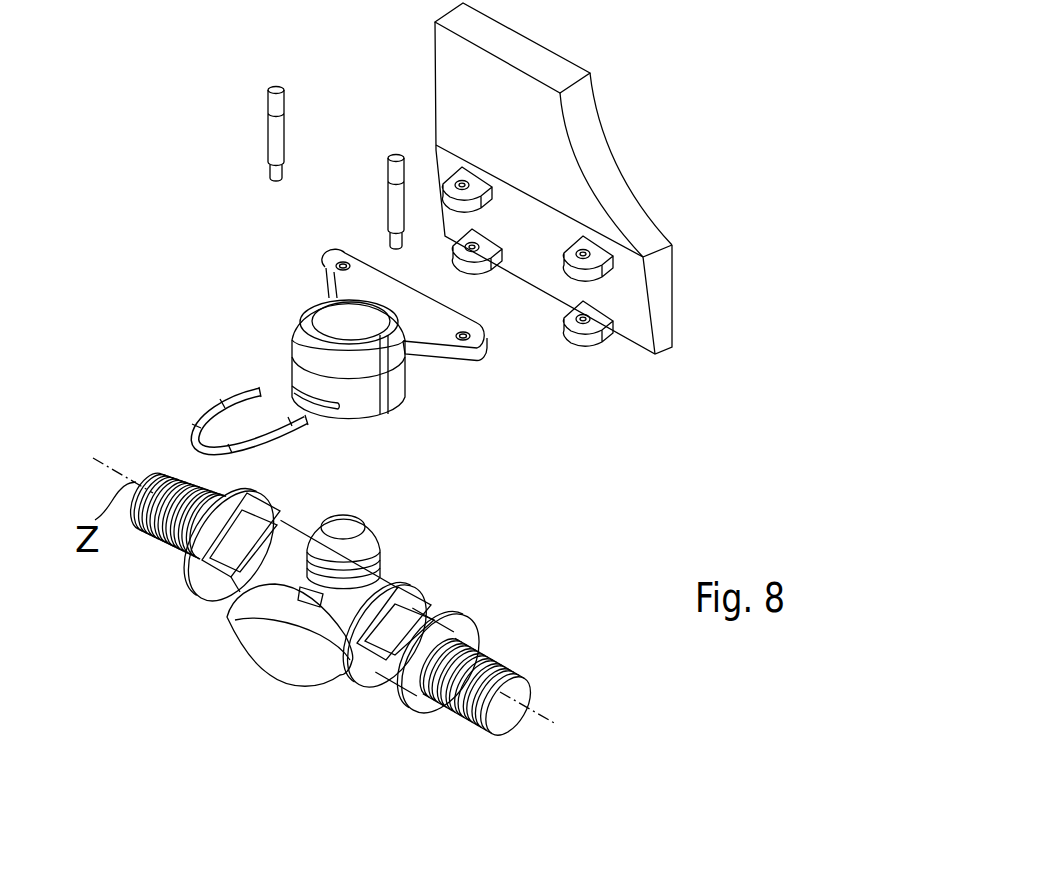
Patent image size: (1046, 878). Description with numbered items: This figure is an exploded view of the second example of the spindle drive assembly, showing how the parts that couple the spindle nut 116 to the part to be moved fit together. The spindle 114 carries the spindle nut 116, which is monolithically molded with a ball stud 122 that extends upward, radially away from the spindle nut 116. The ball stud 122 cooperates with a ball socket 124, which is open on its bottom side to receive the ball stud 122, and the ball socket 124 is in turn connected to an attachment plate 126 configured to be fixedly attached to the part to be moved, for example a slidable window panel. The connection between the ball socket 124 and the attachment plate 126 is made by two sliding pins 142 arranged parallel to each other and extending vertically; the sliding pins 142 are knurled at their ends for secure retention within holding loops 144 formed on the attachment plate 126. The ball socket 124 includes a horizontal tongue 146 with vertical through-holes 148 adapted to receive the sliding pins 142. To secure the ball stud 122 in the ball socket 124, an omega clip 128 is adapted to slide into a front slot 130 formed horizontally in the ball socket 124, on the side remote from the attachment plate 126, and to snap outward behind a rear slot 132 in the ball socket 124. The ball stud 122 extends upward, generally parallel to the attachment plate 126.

The spindle 114 is at (487, 653).
The spindle nut 116 is at (432, 605).
The ball stud 122 is at (358, 556).
The ball socket 124 is at (327, 322).
The attachment plate 126 is at (548, 177).
The omega clip 128 is at (222, 403).
The front slot 130 is at (292, 378).
The rear slot 132 is at (408, 370).
The sliding pins 142 is at (268, 142).
The holding loops 144 is at (578, 351).
The horizontal tongue 146 is at (300, 633).
The vertical through-holes 148 is at (342, 264).